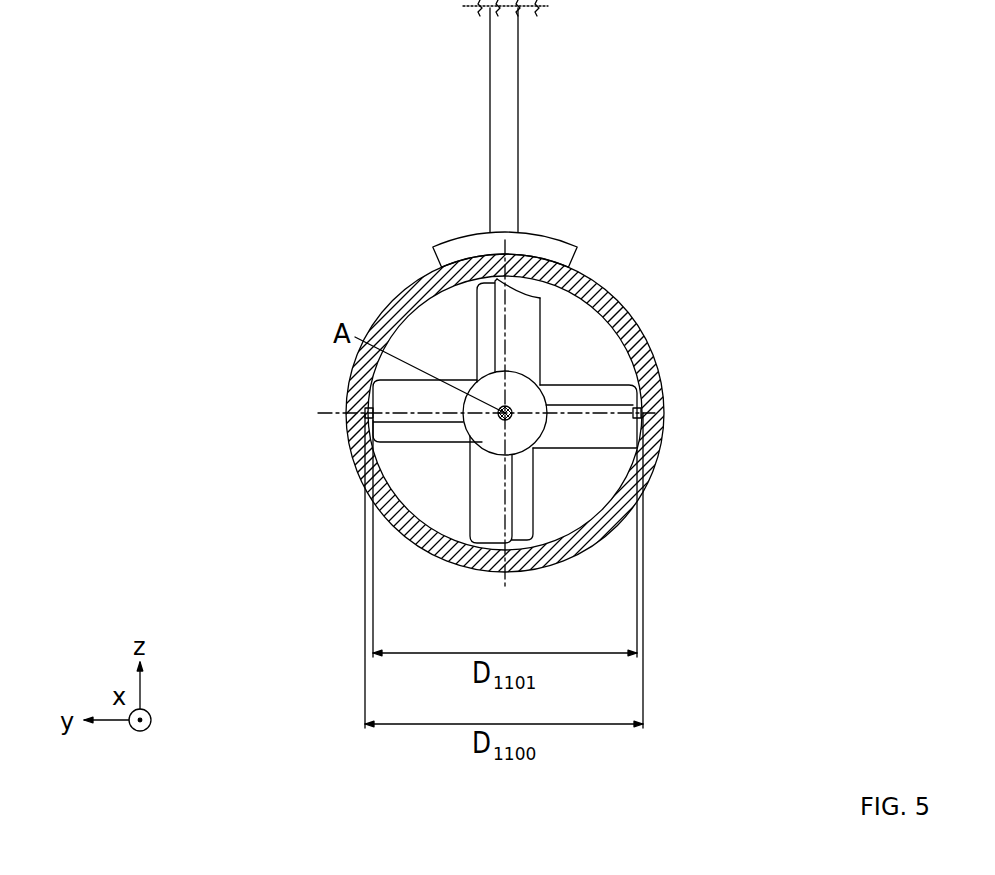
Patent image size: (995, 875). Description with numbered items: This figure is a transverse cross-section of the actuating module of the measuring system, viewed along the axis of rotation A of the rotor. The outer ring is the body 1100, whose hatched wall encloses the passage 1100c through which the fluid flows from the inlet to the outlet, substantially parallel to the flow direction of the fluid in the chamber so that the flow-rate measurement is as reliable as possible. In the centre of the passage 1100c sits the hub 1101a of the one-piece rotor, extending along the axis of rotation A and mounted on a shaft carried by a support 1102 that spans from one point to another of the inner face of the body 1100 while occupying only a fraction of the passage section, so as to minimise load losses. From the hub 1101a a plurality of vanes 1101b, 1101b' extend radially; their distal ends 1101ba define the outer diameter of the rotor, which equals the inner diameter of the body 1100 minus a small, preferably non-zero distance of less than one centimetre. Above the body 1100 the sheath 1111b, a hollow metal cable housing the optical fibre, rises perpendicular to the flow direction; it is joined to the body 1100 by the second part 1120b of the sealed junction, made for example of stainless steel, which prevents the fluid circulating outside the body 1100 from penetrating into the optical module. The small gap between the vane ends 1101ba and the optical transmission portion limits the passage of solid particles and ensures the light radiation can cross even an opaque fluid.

The sheath 1111b is at (520, 103).
The second part of the sealed junction 1120b is at (550, 248).
The end of the vanes 1101ba is at (515, 287).
The vane 1101b is at (639, 452).
The passage 1100c is at (614, 372).
The body 1100 is at (654, 435).
The hub 1101a is at (527, 423).
The vane 1101b' is at (594, 481).
The support 1102 is at (423, 551).